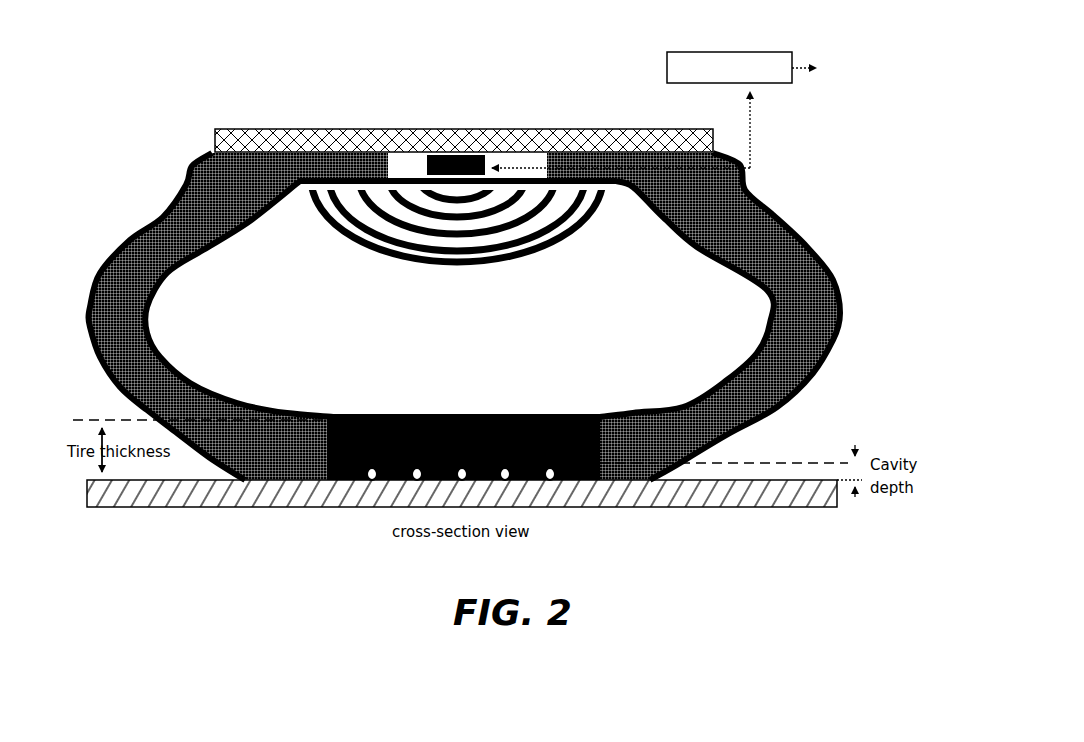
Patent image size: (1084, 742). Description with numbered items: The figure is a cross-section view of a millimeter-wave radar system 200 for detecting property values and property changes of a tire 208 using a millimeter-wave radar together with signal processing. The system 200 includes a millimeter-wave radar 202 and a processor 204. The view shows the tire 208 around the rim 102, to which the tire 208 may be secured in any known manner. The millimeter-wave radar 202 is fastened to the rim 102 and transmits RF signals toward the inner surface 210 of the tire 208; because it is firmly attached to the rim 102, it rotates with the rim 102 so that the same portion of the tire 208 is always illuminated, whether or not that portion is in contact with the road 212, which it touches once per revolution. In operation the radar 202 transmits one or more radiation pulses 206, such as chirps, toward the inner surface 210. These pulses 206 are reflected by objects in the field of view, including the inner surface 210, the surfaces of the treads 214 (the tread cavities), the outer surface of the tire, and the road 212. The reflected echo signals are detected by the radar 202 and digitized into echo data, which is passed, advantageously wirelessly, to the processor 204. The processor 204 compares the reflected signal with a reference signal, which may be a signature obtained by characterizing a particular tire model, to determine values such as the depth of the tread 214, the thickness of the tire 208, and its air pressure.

The millimeter-wave radar system 200 is at (127, 96).
The rim 102 is at (480, 129).
The millimeter-wave radar 202 is at (427, 157).
The processor 204 is at (737, 53).
The radiation pulses 206 is at (356, 247).
The tire 208 is at (767, 232).
The inner surface 210 is at (467, 420).
The road 212 is at (763, 508).
The treads 214 is at (547, 481).